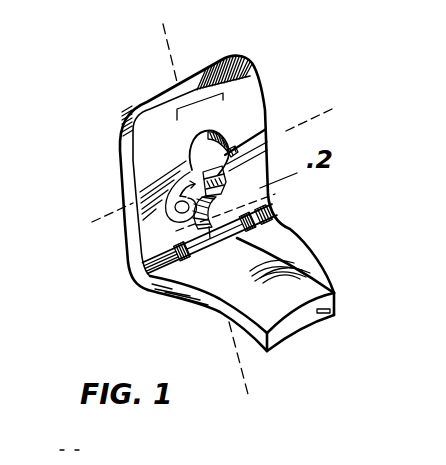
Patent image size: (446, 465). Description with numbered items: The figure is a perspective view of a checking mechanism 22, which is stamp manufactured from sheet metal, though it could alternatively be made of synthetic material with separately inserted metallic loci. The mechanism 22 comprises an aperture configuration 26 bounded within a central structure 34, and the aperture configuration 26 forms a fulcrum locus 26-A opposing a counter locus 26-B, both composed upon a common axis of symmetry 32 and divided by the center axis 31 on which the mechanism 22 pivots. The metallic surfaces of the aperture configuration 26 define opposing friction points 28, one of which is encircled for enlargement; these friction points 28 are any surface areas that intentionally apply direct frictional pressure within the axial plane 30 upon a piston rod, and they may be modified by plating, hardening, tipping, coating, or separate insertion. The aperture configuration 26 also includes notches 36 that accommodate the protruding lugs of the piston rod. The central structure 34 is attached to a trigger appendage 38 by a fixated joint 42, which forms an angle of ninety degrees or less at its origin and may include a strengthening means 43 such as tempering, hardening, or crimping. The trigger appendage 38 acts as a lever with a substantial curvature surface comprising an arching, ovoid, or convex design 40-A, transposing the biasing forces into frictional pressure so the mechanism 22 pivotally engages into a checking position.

The checking mechanism 22 is at (186, 162).
The aperture configuration 26 is at (198, 144).
The fulcrum locus 26-A is at (271, 180).
The counter locus 26-B is at (196, 108).
The opposing friction points 28 is at (186, 162).
The axial plane 30 is at (139, 196).
The center axis 31 is at (84, 228).
The common axis of symmetry 32 is at (164, 23).
The central structure 34 is at (128, 157).
The notches 36 is at (238, 150).
The trigger appendage 38 is at (234, 316).
The arching, ovoid, or convex design 40-A is at (330, 285).
The fixated joint 42 is at (151, 302).
The strengthening means 43 is at (277, 221).